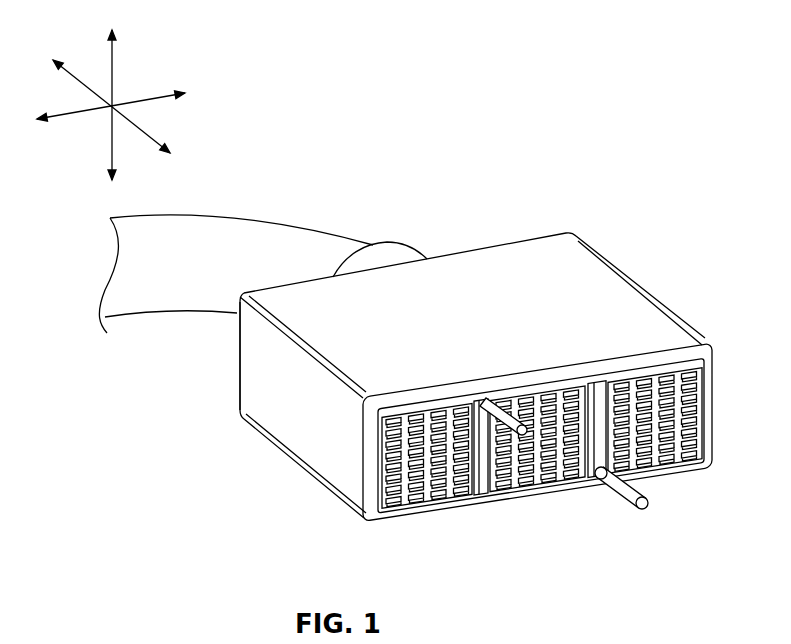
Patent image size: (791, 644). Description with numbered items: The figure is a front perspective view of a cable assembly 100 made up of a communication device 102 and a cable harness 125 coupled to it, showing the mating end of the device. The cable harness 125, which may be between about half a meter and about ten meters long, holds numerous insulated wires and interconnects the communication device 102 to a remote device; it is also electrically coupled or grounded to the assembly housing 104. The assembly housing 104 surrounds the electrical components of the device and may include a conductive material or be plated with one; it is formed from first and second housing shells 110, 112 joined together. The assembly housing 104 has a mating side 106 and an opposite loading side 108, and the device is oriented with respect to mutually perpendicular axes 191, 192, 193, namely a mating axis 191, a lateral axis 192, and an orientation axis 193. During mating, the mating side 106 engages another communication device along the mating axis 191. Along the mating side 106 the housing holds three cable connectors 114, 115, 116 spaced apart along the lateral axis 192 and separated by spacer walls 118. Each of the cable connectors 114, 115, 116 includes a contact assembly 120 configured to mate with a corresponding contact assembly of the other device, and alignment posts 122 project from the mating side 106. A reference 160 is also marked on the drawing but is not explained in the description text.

The cable assembly 100 is at (602, 124).
The communication device 102 is at (725, 280).
The assembly housing 104 is at (530, 285).
The mating side 106 is at (565, 452).
The loading side 108 is at (222, 352).
The first housing shell 110 is at (610, 310).
The second housing shell 112 is at (313, 437).
The cable connector 114 is at (432, 503).
The cable connector 115 is at (518, 487).
The cable connector 116 is at (690, 458).
The spacer wall 118 is at (602, 412).
The contact assembly 120 is at (398, 417).
The alignment post 122 is at (636, 503).
The cable harness 125 is at (334, 214).
The strap 160 is at (263, 236).
The mating axis 191 is at (160, 137).
The lateral axis 192 is at (143, 97).
The orientation axis 193 is at (110, 133).